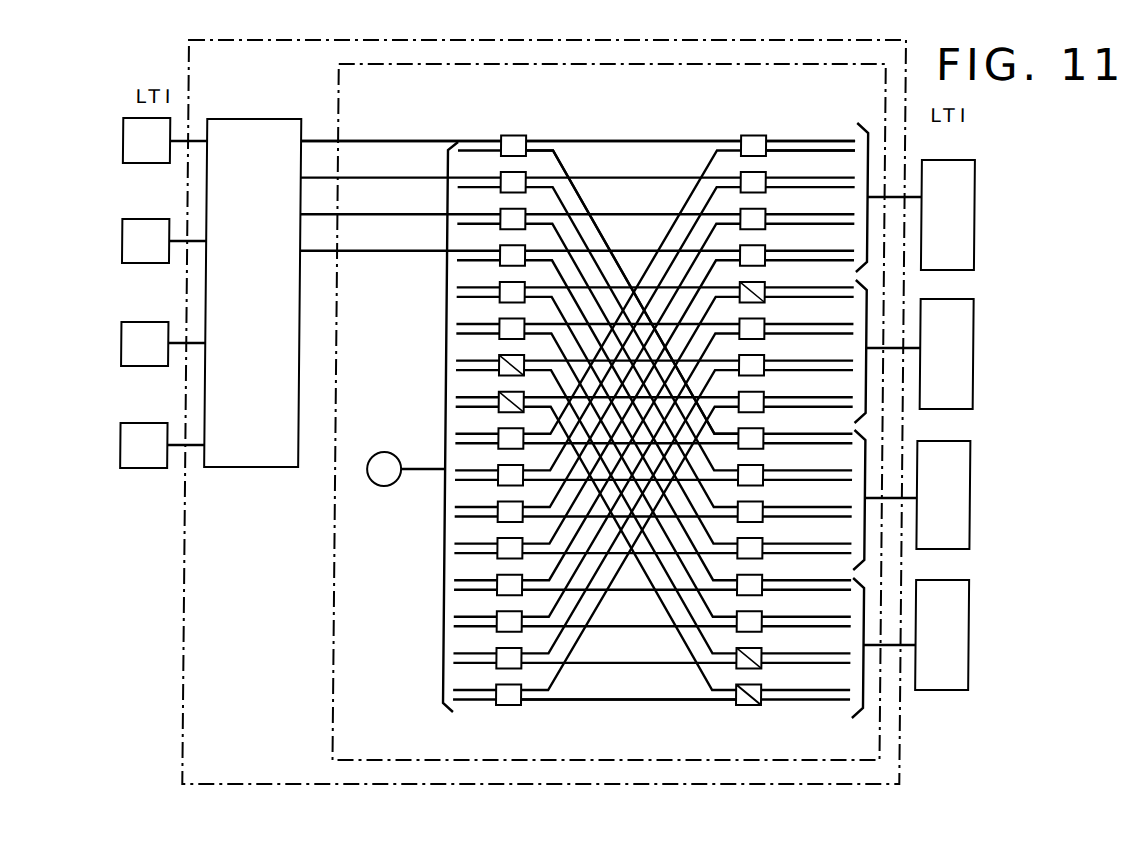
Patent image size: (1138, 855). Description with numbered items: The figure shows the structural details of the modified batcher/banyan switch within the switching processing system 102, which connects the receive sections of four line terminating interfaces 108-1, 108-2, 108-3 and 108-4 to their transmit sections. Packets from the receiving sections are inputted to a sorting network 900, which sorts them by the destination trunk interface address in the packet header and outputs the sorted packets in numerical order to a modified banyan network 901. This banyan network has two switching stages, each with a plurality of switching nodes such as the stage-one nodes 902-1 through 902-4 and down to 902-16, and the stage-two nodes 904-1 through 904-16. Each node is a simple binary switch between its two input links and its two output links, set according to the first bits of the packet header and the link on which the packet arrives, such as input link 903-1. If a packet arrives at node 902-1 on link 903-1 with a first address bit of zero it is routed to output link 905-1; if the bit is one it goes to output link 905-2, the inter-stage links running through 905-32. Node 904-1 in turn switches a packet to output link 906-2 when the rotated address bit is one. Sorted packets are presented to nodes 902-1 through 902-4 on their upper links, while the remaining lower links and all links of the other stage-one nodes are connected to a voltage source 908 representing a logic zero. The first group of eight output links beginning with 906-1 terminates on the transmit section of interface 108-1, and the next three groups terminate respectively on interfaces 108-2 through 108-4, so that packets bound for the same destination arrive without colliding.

The switching processing system (SPS) 102 is at (205, 660).
The line terminating interface (LTI) 108-1 is at (133, 158).
The line terminating interface (LTI) 108-2 is at (133, 259).
The line terminating interface (LTI) 108-3 is at (133, 361).
The line terminating interface (LTI) 108-4 is at (133, 464).
The sorting network 900 is at (247, 452).
The modified banyan network 901 is at (591, 412).
The switching node 902-1 is at (515, 122).
The switching node 902-4 is at (512, 260).
The switching node 902-16 is at (493, 702).
The input link 903-1 is at (410, 123).
The switching node 904-1 is at (750, 122).
The switching node 904-16 is at (713, 705).
The output link 905-1 is at (603, 122).
The output link 905-2 is at (561, 163).
The output link 905-32 is at (612, 702).
The output link 906-1 is at (797, 140).
The output link 906-2 is at (783, 152).
The voltage source 908 is at (385, 472).